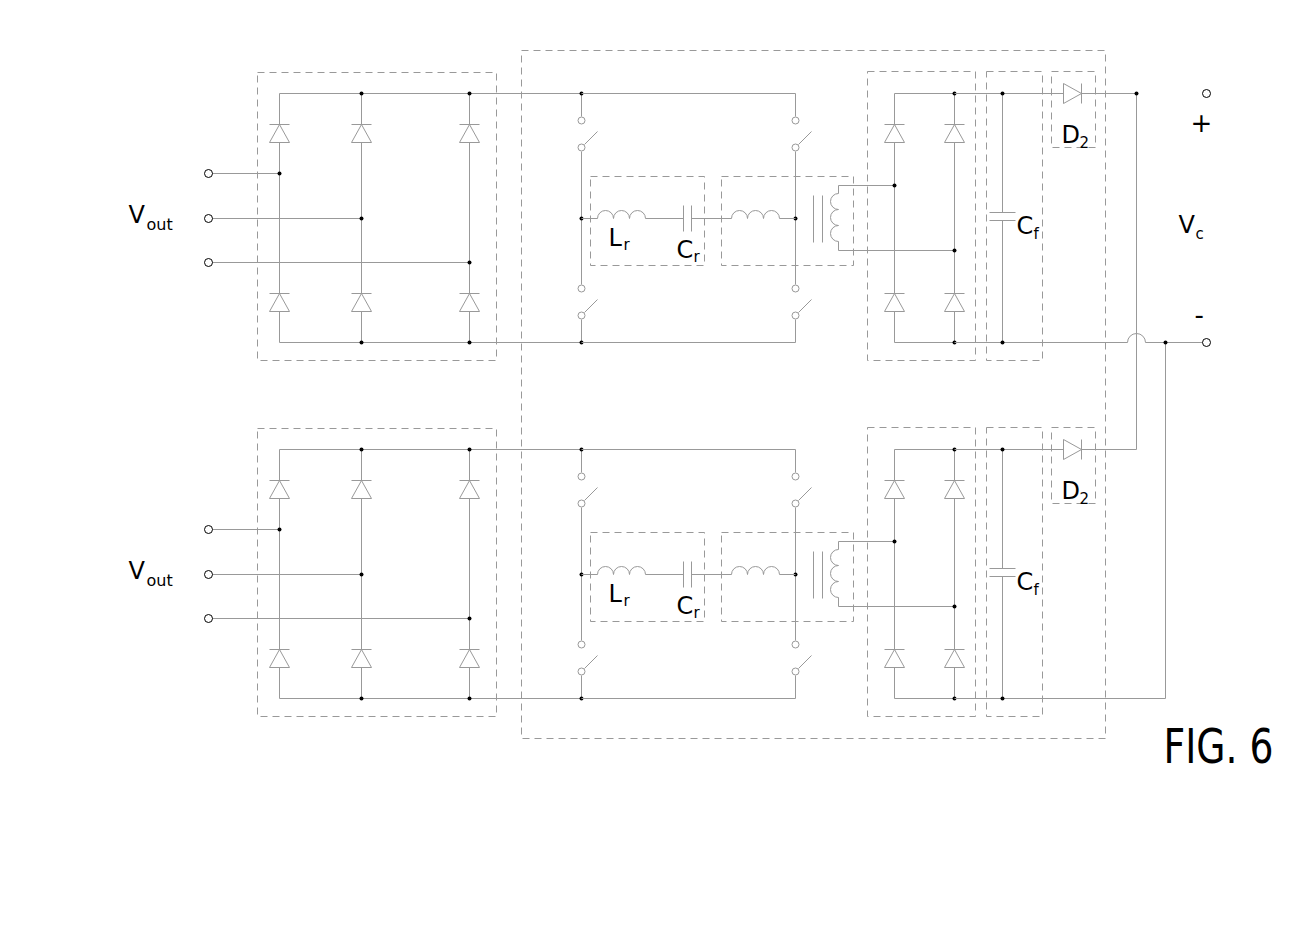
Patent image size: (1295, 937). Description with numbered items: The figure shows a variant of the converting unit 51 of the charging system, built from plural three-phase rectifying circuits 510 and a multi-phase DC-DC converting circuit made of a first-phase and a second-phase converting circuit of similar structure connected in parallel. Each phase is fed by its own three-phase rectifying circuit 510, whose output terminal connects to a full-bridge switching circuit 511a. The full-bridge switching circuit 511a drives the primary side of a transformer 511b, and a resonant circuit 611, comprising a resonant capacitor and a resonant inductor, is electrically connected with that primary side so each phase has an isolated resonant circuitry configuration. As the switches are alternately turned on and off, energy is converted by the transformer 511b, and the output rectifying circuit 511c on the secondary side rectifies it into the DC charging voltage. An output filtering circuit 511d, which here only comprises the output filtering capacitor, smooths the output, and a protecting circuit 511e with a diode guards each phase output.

The converting unit 51 is at (1275, 63).
The three-phase rectifying circuit 510 is at (378, 72).
The full-bridge switching circuit 511a is at (568, 134).
The transformer 511b is at (750, 176).
The output rectifying circuit 511c is at (867, 88).
The output filtering circuit 511d is at (1012, 71).
The protecting circuit 511e is at (1070, 148).
The resonant circuit 611 is at (664, 176).